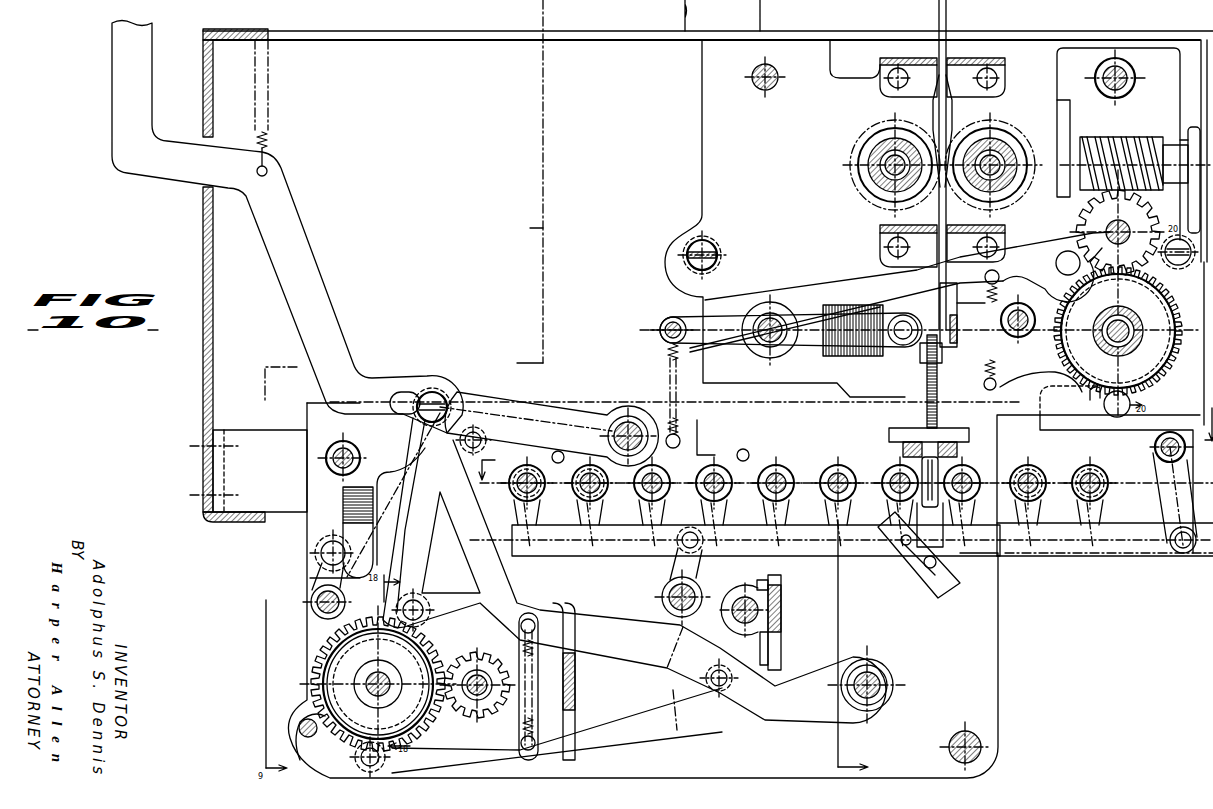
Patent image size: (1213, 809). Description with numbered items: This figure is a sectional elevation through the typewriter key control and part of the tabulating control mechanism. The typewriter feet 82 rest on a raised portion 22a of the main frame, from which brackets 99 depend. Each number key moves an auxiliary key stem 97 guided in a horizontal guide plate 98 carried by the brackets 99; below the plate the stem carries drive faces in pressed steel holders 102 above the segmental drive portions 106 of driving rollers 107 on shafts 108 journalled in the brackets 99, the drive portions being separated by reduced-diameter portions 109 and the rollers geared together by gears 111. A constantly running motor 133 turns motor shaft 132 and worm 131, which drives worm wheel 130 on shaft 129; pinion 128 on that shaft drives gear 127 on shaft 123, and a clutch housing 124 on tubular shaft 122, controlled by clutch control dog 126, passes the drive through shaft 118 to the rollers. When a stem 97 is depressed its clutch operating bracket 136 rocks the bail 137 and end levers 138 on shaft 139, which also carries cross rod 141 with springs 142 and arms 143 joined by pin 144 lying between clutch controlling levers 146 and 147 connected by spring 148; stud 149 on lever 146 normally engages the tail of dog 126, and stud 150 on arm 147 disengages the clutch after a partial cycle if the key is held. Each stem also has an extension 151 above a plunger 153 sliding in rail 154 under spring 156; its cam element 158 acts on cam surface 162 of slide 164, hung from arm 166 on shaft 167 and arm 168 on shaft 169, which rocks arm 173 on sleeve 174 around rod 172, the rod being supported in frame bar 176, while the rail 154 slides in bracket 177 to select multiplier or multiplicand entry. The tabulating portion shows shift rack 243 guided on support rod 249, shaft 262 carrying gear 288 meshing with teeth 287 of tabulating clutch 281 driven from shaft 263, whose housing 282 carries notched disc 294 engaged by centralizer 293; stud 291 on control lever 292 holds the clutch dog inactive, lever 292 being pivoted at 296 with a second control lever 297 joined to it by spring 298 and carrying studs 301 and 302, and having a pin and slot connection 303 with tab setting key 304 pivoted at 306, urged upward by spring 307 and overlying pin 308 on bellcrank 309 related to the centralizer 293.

The raised portion of the main frame 22a is at (334, 30).
The feet 82 is at (683, 17).
The auxiliary key stem 97 is at (947, 32).
The guide plate 98 is at (880, 61).
The brackets 99 is at (702, 135).
The holder 102 is at (938, 108).
The segmental drive portions 106 is at (886, 128).
The driving rollers 107 is at (872, 160).
The shafts 108 is at (882, 170).
The portions of reduced diameter 109 is at (866, 135).
The gears 111 is at (844, 196).
The shaft 118 is at (1018, 309).
The tubular shaft 122 is at (1108, 318).
The shaft 123 is at (1122, 320).
The clutch housing 124 is at (1050, 393).
The clutch control dog 126 is at (1104, 386).
The gear 127 is at (1128, 333).
The pinion 128 is at (1150, 190).
The shaft 129 is at (1086, 232).
The worm wheel 130 is at (1078, 205).
The driving worm 131 is at (1110, 136).
The motor shaft 132 is at (1164, 146).
The motor 133 is at (1190, 135).
The clutch operating bracket 136 is at (985, 277).
The clutch operating bar 137 is at (958, 347).
The end levers 138 is at (730, 312).
The transverse shaft 139 is at (773, 316).
The cross rod 141 is at (668, 318).
The springs 142 is at (669, 352).
The arms 143 is at (884, 357).
The transverse pin 144 is at (896, 312).
The clutch controlling lever 146 is at (883, 392).
The clutch controlling arm 147 is at (840, 288).
The spring 148 is at (996, 378).
The stud 149 is at (1110, 412).
The stud 150 is at (1056, 254).
The extension 151 is at (880, 276).
The plunger 153 is at (938, 384).
The rail 154 is at (957, 448).
The springs 156 is at (950, 427).
The cam element 158 is at (912, 572).
The cam surface 162 is at (935, 590).
The slide 164 is at (1060, 556).
The depending arm 166 is at (1164, 492).
The transverse shaft 167 is at (1160, 443).
The upstanding arm 168 is at (674, 575).
The transverse shaft 169 is at (670, 602).
The rod 172 is at (524, 490).
The arm 173 is at (650, 532).
The sleeve 174 is at (834, 477).
The frame bar 176 is at (181, 430).
The bracket 177 is at (996, 710).
The shift rack 243 is at (782, 624).
The support rod 249 is at (740, 597).
The shaft 262 is at (480, 670).
The shaft 263 is at (368, 686).
The tabulating clutch 281 is at (324, 666).
The clutch housing 282 is at (335, 735).
The teeth 287 is at (336, 650).
The gear 288 is at (464, 716).
The stud 291 is at (386, 756).
The clutch control lever 292 is at (603, 736).
The centralizer 293 is at (320, 571).
The notched disc 294 is at (340, 684).
The pivot 296 is at (876, 695).
The control lever 297 is at (527, 610).
The spring 298 is at (557, 612).
The stud 301 is at (711, 673).
The stud 302 is at (423, 615).
The pin and slot connection 303 is at (441, 386).
The tab setting key 304 is at (316, 260).
The pivot 306 is at (624, 416).
The spring 307 is at (270, 139).
The pin 308 is at (480, 428).
The bellcrank 309 is at (340, 481).